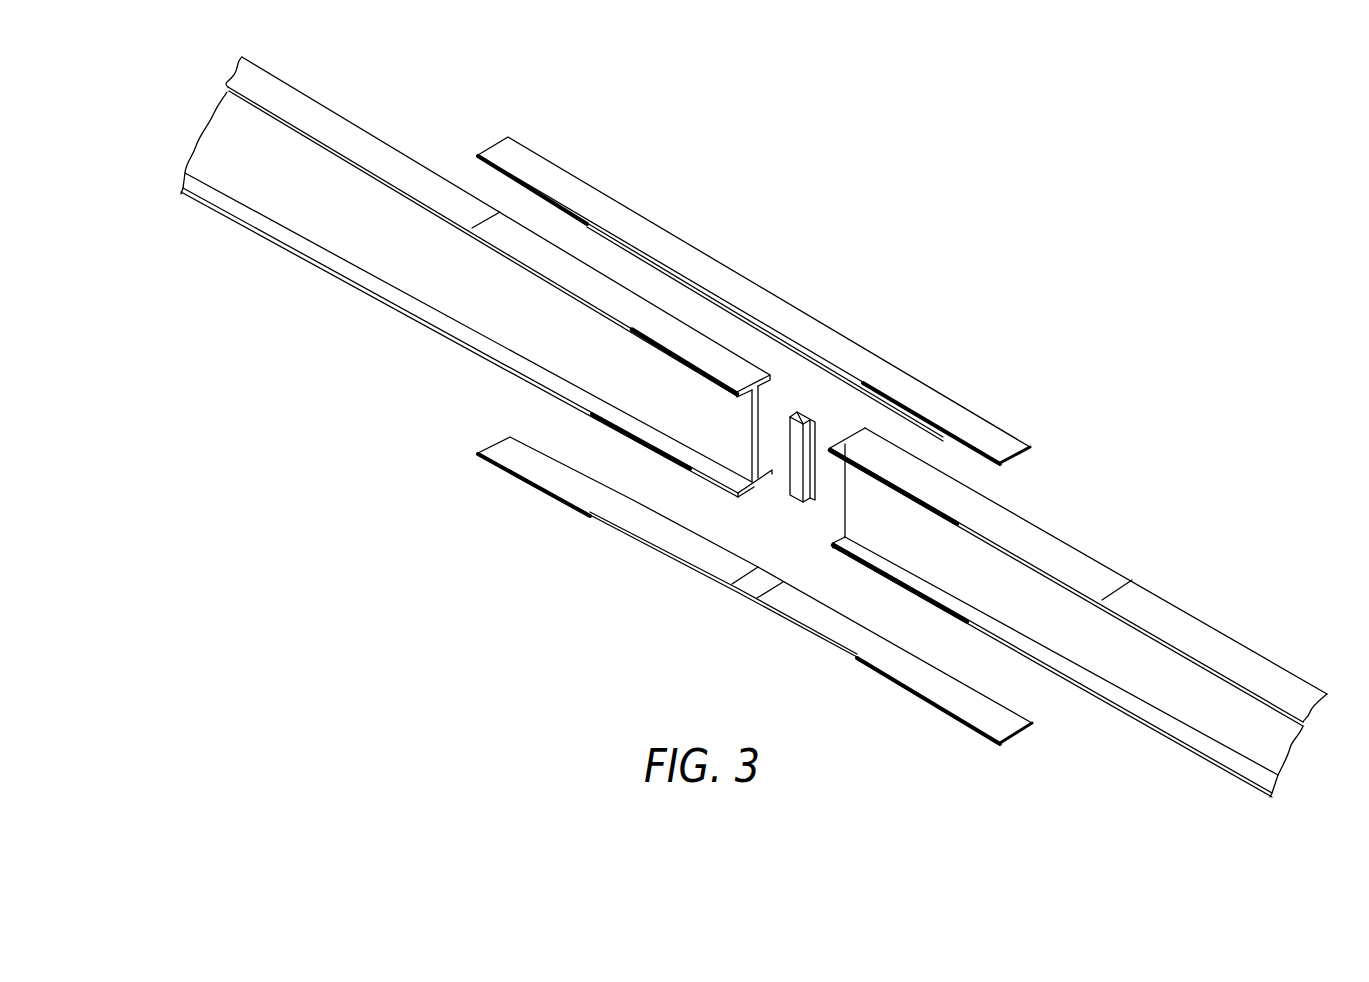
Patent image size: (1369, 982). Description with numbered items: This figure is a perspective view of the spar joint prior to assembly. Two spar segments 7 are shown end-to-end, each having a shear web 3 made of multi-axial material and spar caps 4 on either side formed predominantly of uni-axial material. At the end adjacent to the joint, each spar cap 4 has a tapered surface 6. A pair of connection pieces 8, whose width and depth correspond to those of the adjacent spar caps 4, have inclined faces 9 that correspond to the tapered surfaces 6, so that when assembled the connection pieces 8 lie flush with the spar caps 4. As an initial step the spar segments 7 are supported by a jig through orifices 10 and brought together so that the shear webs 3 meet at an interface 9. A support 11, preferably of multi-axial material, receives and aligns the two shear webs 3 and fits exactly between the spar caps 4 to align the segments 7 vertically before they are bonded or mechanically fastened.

The shear web 3 is at (447, 297).
The spar cap 4 is at (334, 113).
The tapered surface 6 is at (634, 323).
The spar segment 7 is at (754, 436).
The connection piece 8 is at (805, 318).
The inclined face 9 is at (587, 223).
The orifice 10 is at (727, 434).
The support 11 is at (793, 496).